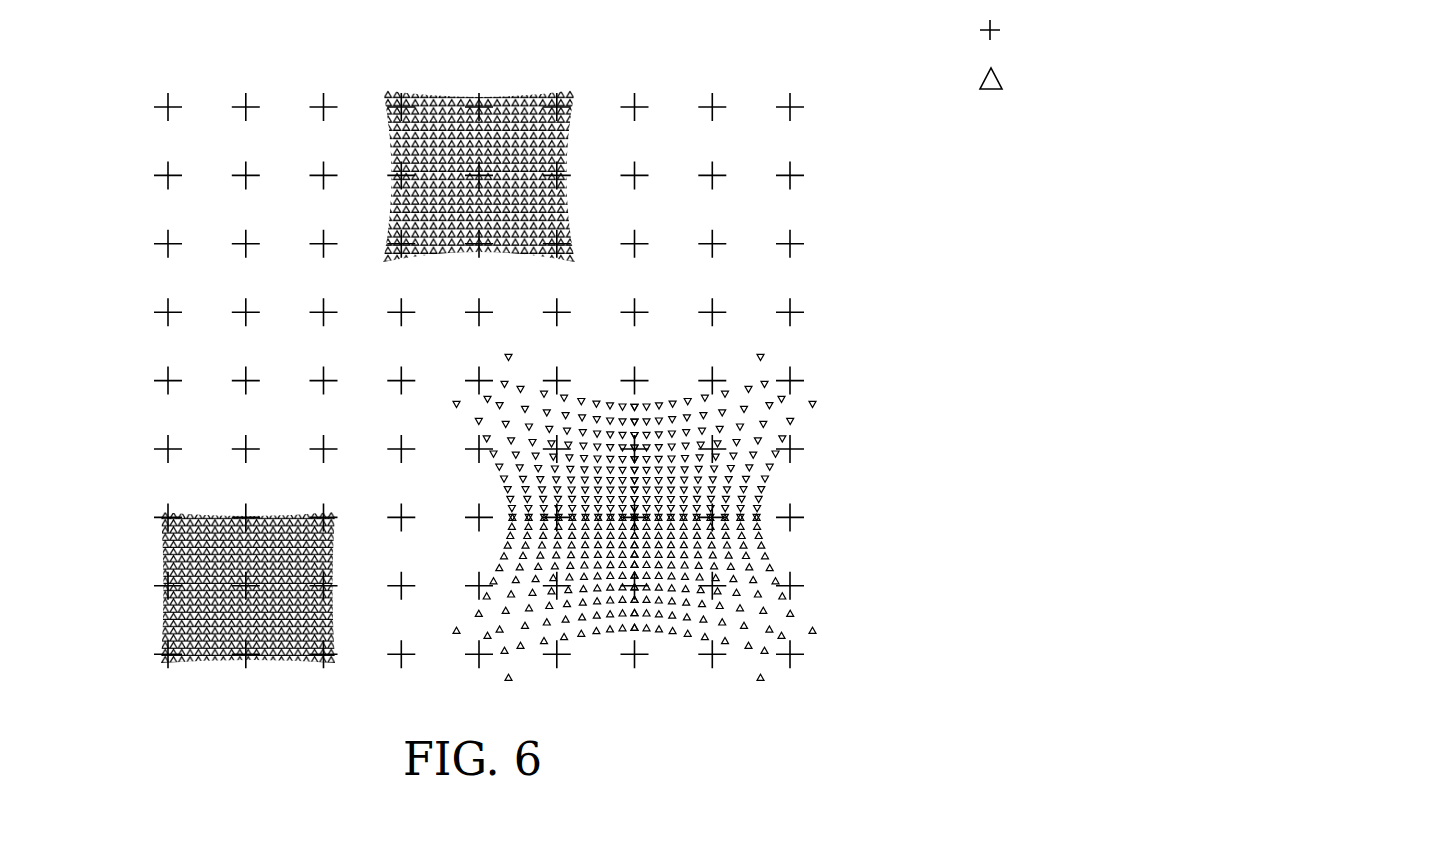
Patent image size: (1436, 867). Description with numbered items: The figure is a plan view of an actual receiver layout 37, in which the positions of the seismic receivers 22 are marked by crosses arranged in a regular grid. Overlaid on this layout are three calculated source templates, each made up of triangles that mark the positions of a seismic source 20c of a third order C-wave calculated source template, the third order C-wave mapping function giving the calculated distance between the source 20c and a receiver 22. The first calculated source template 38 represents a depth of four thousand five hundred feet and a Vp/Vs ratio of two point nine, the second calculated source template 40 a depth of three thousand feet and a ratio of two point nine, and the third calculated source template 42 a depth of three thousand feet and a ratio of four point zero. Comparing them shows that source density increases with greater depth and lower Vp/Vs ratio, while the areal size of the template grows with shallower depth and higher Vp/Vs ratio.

The seismic receiver 22 is at (754, 341).
The seismic source 20c is at (1201, 94).
The actual receiver layout 37 is at (805, 313).
The first calculated source template 38 is at (165, 559).
The second calculated source template 40 is at (505, 100).
The third calculated source template 42 is at (765, 481).